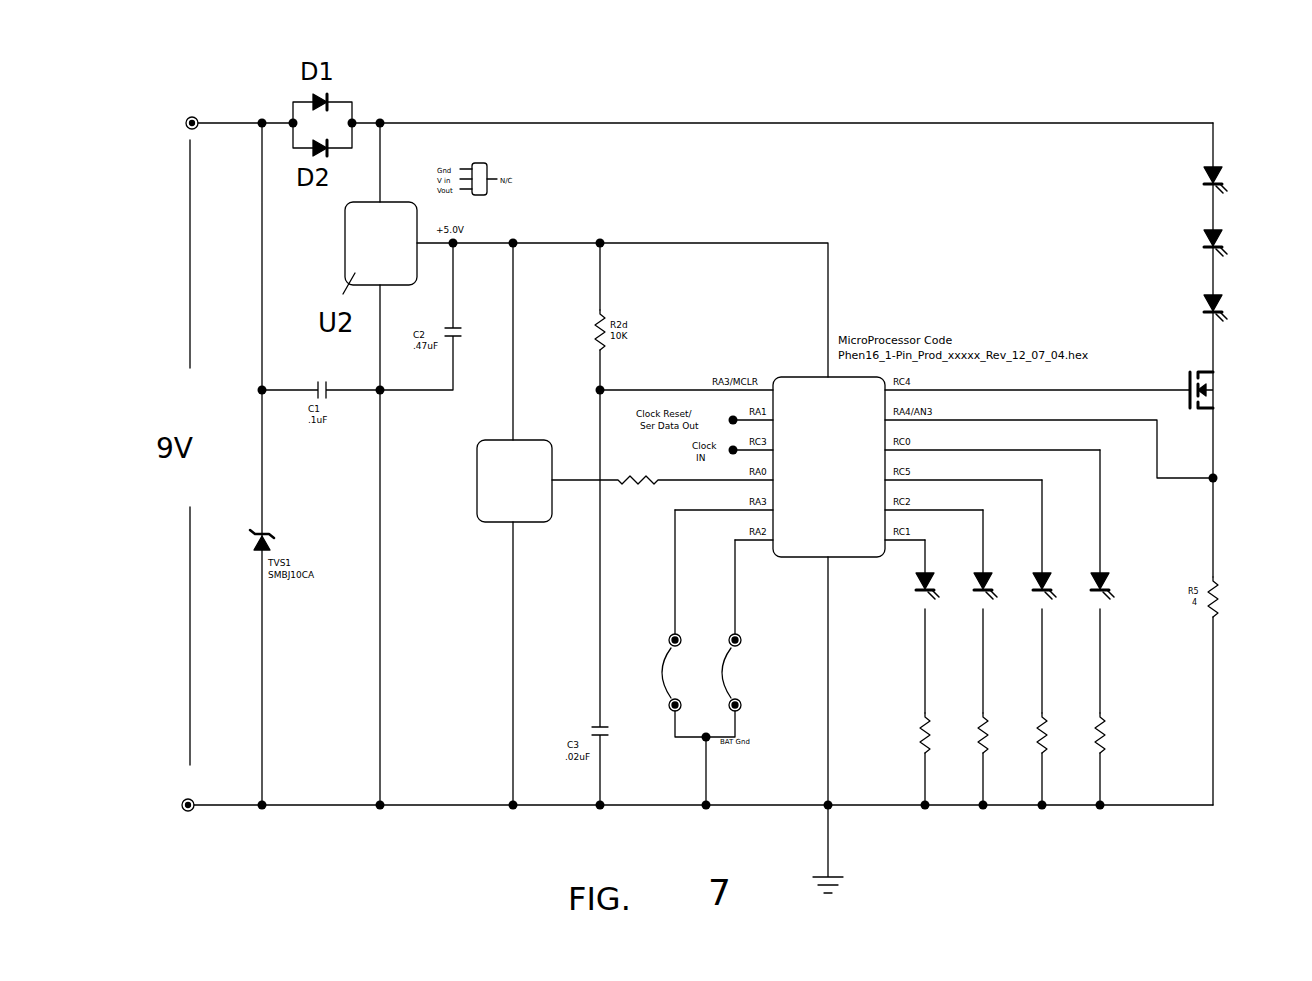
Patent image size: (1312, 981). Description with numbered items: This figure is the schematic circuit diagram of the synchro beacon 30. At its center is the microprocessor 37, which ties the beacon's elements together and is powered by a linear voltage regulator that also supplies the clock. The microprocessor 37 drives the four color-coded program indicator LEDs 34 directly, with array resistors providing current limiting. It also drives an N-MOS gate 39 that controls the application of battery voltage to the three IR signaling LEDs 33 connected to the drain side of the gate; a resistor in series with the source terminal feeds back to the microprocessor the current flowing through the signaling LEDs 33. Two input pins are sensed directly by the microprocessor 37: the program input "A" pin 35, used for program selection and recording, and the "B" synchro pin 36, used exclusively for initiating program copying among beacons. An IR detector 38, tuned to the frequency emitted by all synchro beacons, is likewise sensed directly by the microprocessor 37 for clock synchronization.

The synchro beacon 30 is at (1122, 98).
The IR signaling LEDs 33 is at (1230, 176).
The program indicator LEDs 34 is at (970, 577).
The program input "A" pin 35 is at (744, 646).
The "B" synchro pin 36 is at (679, 637).
The microprocessor 37 is at (832, 520).
The IR detector 38 is at (519, 448).
The N-MOS gate 39 is at (1180, 398).